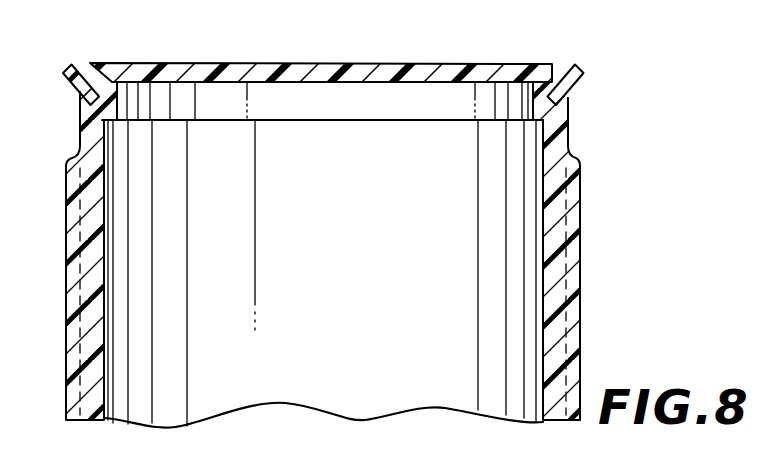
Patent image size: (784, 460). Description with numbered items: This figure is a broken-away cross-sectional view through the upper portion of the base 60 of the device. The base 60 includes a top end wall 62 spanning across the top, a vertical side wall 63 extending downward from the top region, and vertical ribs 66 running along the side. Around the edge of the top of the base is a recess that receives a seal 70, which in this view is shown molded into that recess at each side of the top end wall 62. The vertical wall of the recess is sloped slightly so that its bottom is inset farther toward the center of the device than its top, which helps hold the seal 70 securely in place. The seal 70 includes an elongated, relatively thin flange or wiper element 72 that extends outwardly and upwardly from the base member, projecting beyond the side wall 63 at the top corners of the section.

The base 60 is at (682, 62).
The top end wall 62 is at (418, 63).
The vertical side wall 63 is at (568, 132).
The vertical ribs 66 is at (68, 288).
The seal 70 is at (70, 96).
The wiper element 72 is at (67, 66).